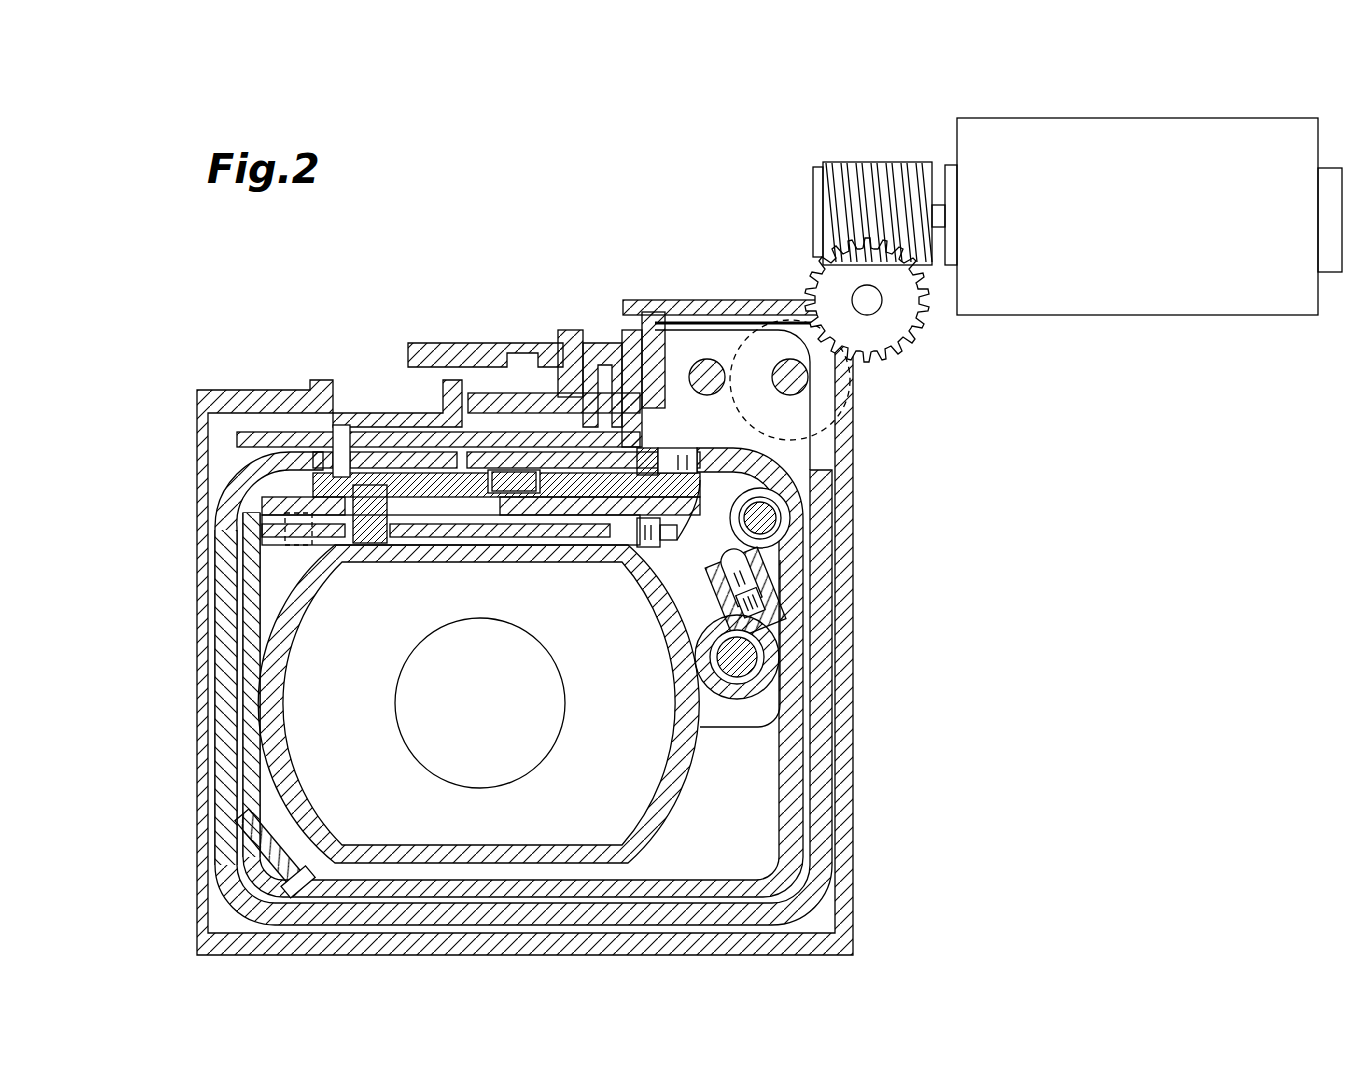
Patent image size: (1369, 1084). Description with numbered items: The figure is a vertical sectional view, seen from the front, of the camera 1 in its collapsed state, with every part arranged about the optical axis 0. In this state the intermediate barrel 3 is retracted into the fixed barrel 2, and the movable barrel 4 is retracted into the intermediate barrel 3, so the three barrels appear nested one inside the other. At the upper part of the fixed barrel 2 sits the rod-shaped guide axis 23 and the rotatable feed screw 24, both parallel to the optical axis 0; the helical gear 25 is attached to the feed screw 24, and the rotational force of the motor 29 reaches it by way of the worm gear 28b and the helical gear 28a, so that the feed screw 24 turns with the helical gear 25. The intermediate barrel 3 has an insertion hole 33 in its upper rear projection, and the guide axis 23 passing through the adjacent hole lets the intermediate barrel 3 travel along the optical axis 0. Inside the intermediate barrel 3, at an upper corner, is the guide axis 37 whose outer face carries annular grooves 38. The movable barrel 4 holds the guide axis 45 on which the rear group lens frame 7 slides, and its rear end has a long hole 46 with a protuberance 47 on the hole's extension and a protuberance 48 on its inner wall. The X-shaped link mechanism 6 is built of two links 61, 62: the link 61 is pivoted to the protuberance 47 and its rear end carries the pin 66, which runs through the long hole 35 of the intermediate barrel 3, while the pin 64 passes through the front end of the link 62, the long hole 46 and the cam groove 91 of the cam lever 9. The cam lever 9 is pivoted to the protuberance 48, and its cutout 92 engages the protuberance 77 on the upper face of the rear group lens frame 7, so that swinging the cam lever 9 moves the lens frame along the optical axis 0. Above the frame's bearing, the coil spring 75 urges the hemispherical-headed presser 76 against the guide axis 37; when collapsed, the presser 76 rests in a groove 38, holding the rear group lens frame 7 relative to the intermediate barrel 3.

The optical axis 0 is at (488, 705).
The camera 1 is at (880, 481).
The fixed barrel 2 is at (858, 775).
The intermediate barrel 3 is at (835, 812).
The movable barrel 4 is at (815, 850).
The link mechanism 6 is at (487, 470).
The rear group lens frame 7 is at (700, 745).
The cam lever 9 is at (547, 545).
The guide axis 23 is at (700, 368).
The feed screw 24 is at (800, 378).
The helical gear 25 is at (722, 305).
The helical gear 28a is at (912, 330).
The worm gear 28b is at (872, 172).
The motor 29 is at (1130, 312).
The insertion hole 33 is at (645, 372).
The long hole 35 is at (396, 455).
The guide axis 37 is at (782, 510).
The groove 38 is at (778, 525).
The guide axis 45 is at (770, 650).
The long hole 46 is at (475, 512).
The protuberance 47 is at (678, 462).
The protuberance 48 is at (290, 560).
The link 61 is at (445, 472).
The link 62 is at (556, 472).
The pin 64 is at (375, 545).
The pin 66 is at (342, 440).
The coil spring 75 is at (770, 600).
The presser 76 is at (768, 570).
The protuberance 77 is at (668, 548).
The cam groove 91 is at (455, 538).
The cutout 92 is at (625, 547).